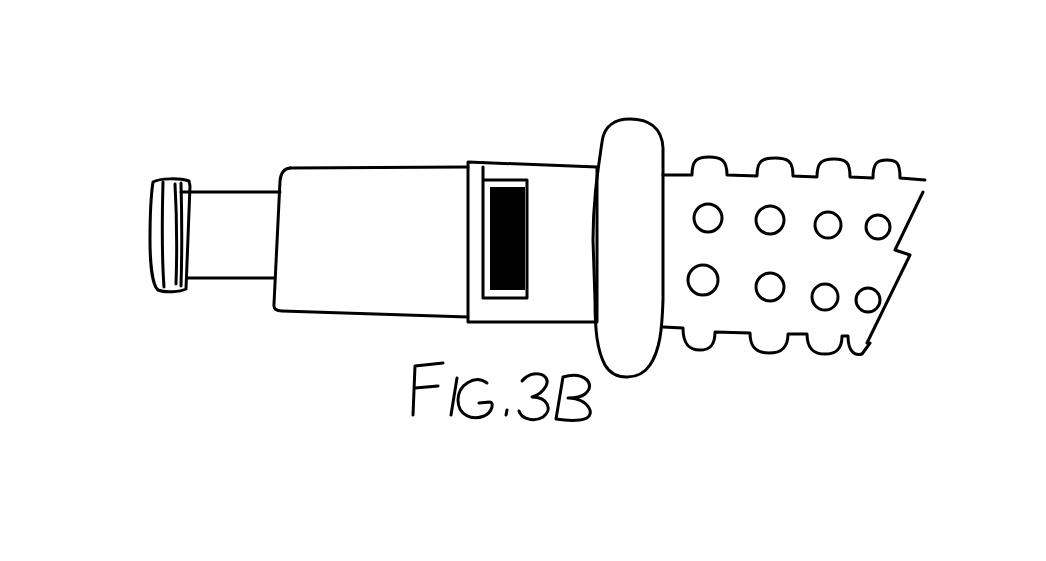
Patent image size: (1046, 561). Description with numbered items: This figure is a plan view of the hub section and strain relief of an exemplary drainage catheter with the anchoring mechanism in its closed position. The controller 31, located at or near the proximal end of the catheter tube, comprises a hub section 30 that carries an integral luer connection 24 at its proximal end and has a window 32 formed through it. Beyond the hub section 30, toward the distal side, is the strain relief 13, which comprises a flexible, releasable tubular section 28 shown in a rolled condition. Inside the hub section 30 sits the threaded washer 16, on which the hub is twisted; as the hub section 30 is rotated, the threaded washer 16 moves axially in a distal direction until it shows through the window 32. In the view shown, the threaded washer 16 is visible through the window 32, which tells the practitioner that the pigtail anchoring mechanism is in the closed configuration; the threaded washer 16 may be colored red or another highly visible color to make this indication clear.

The strain relief 13 is at (732, 190).
The threaded washer 16 is at (503, 180).
The luer connection 24 is at (167, 250).
The tubular section 28 is at (643, 147).
The hub section 30 is at (340, 187).
The controller 31 is at (316, 121).
The window 32 is at (520, 180).